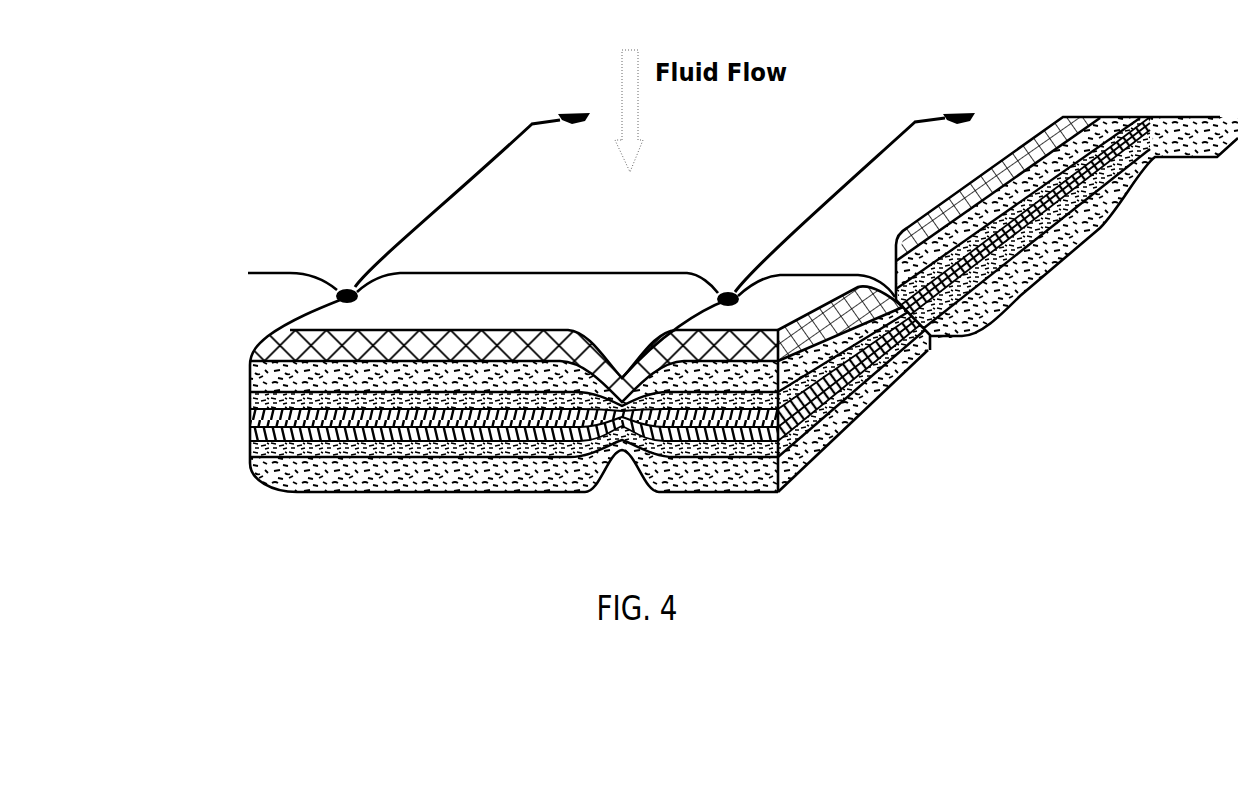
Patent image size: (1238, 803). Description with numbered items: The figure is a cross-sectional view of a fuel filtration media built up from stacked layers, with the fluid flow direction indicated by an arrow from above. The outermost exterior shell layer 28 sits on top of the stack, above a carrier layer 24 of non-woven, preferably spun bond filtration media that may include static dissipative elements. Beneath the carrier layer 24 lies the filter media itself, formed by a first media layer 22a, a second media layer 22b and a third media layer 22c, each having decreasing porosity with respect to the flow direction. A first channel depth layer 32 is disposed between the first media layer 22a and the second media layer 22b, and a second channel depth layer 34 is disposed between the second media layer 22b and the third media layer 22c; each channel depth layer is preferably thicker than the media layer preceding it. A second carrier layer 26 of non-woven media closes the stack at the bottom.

The first media layer 22a is at (253, 400).
The second media layer 22b is at (255, 430).
The third media layer 22c is at (317, 453).
The carrier layer 24 is at (303, 377).
The carrier layer 26 is at (462, 475).
The exterior shell layer 28 is at (437, 350).
The first channel depth layer 32 is at (255, 413).
The second channel depth layer 34 is at (255, 438).